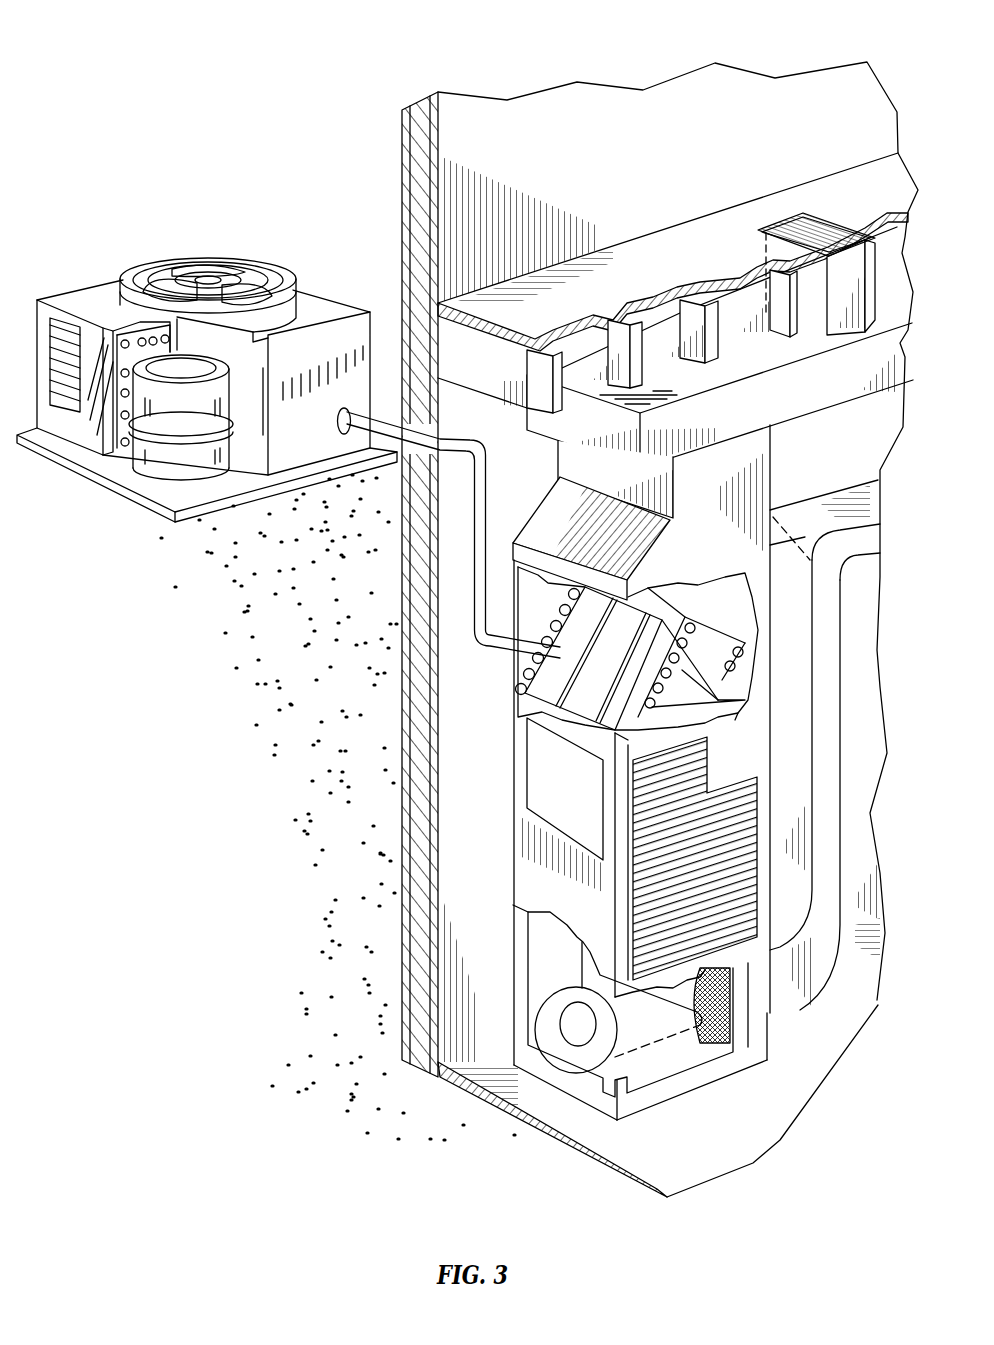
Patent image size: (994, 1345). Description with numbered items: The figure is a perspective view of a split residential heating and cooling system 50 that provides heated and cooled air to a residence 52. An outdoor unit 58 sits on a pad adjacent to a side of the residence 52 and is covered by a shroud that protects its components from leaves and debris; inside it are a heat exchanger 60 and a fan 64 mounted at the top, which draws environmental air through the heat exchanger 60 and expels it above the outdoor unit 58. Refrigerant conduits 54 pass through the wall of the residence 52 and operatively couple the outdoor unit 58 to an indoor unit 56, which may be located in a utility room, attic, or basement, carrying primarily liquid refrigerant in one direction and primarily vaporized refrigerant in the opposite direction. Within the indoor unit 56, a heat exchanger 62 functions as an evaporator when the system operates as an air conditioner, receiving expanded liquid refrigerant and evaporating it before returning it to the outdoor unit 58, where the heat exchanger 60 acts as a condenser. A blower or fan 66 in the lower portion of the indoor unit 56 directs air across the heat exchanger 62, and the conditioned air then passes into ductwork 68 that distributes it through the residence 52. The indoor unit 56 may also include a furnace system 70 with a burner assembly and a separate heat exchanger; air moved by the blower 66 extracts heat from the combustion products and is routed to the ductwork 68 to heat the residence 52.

The residential heating and cooling system 50 is at (320, 36).
The residence 52 is at (567, 100).
The refrigerant conduits 54 is at (477, 517).
The indoor unit 56 is at (494, 829).
The outdoor unit 58 is at (146, 244).
The heat exchanger 60 is at (127, 340).
The heat exchanger 62 is at (580, 688).
The fan 64 is at (230, 270).
The blower or fan 66 is at (568, 1050).
The ductwork 68 is at (890, 353).
The furnace system 70 is at (525, 755).